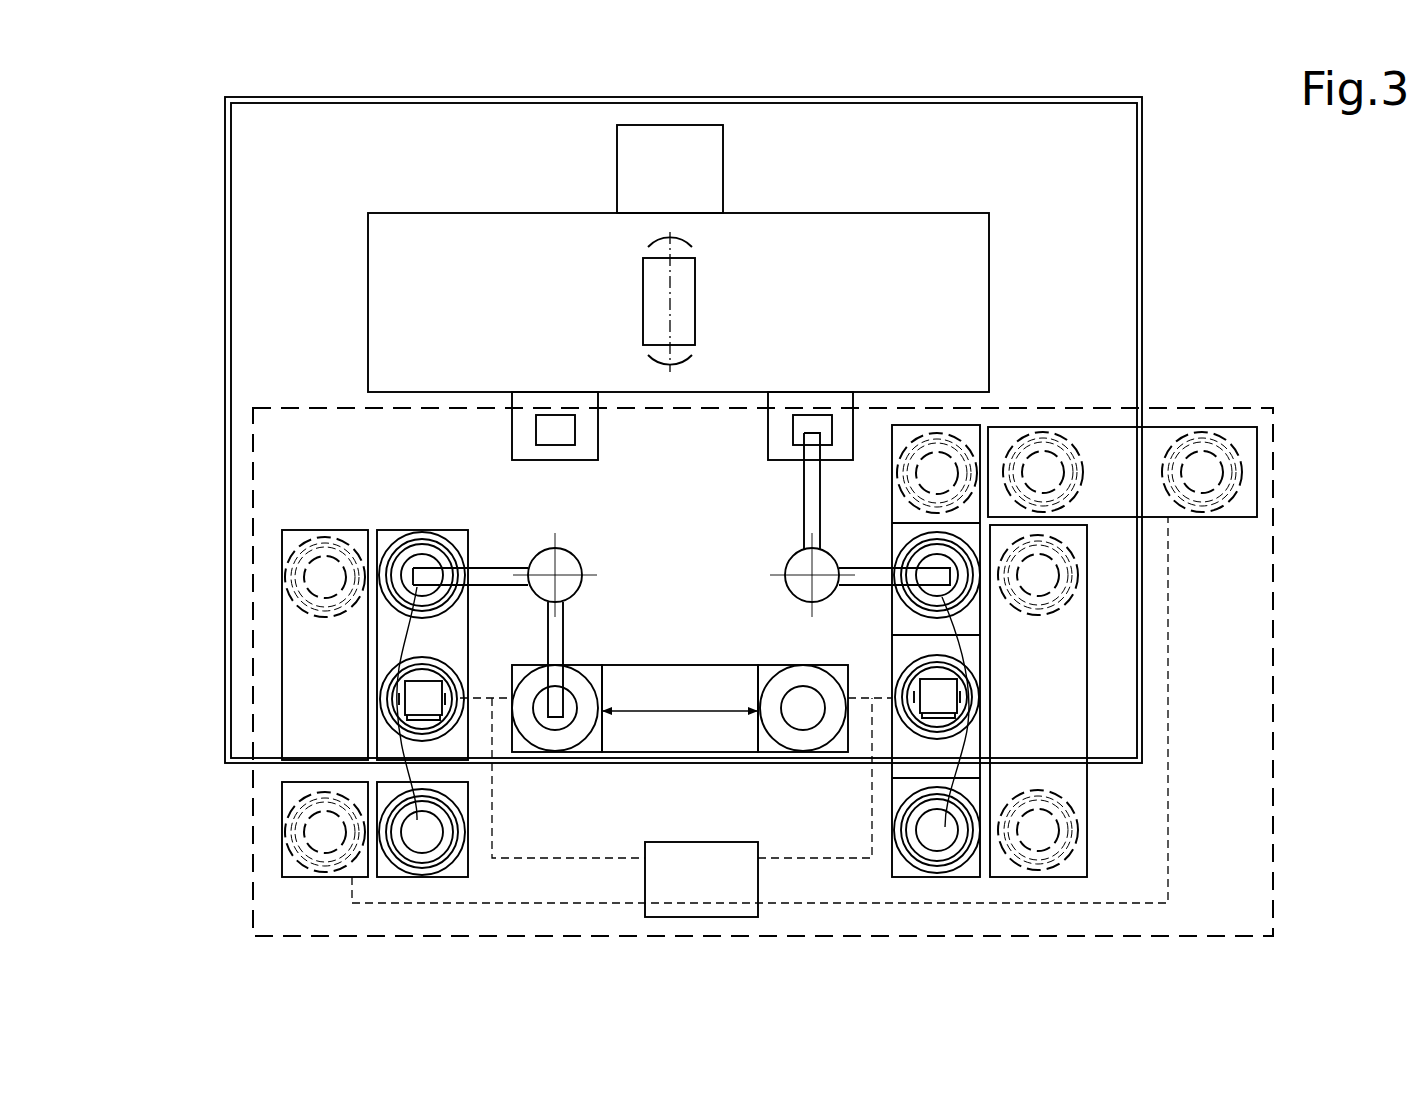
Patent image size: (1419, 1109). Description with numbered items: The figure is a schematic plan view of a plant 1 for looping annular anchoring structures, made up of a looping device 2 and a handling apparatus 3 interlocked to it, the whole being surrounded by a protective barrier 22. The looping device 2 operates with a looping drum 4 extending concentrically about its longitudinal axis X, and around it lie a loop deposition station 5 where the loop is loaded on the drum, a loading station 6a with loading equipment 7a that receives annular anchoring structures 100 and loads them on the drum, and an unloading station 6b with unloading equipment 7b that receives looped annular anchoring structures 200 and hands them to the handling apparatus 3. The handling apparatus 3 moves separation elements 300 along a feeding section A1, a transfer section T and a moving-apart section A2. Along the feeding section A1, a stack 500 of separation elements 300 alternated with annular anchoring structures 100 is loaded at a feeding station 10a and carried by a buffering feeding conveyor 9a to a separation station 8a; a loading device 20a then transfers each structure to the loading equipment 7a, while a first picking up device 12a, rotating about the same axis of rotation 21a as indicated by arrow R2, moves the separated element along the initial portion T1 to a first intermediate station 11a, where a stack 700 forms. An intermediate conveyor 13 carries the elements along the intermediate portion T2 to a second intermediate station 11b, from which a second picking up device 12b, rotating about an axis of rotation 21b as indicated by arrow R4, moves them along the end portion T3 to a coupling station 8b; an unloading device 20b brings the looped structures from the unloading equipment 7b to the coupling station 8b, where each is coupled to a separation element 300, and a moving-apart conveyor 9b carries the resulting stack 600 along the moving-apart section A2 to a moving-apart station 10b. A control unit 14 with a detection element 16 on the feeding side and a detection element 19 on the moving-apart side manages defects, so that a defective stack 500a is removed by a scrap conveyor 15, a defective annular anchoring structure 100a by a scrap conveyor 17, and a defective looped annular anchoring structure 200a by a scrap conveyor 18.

The plant for looping annular anchoring structures 1 is at (1262, 267).
The looping device 2 is at (838, 232).
The handling apparatus 3 is at (1193, 425).
The looping drum 4 is at (653, 285).
The loop deposition station 5 is at (670, 169).
The loading station 6a is at (833, 400).
The unloading station 6b is at (548, 398).
The loading equipment 7a is at (797, 415).
The unloading equipment 7b is at (552, 430).
The separation station 8a is at (968, 532).
The coupling station 8b is at (417, 545).
The feeding conveyor 9a is at (973, 648).
The moving-apart conveyor 9b is at (387, 625).
The feeding station 10a is at (970, 875).
The moving-apart station 10b is at (462, 792).
The first intermediate station 11a is at (768, 667).
The second intermediate station 11b is at (590, 665).
The first picking up device 12a is at (873, 573).
The second picking up device 12b is at (565, 618).
The intermediate conveyor 13 is at (705, 677).
The control unit 14 is at (760, 717).
The scrap conveyor 15 is at (1104, 447).
The detection element 16 is at (937, 697).
The scrap conveyor 17 is at (1077, 653).
The scrap conveyor 18 is at (295, 650).
The detection element 19 is at (422, 699).
The loading device 20a is at (806, 500).
The unloading device 20b is at (487, 568).
The axis of rotation 21a is at (810, 573).
The axis of rotation 21b is at (582, 567).
The protective barrier 22 is at (232, 212).
The annular anchoring structure 100 is at (917, 858).
The defective annular anchoring structure 100a is at (1068, 568).
The looped annular anchoring structure 200 is at (385, 538).
The defective looped annular anchoring structure 200a is at (296, 557).
The separation element 300 is at (450, 530).
The stack 500 is at (993, 870).
The defective stack 500a is at (943, 432).
The stack 600 is at (470, 870).
The stack 700 is at (787, 737).
The feeding section A1 is at (960, 737).
The moving-apart section A2 is at (387, 747).
The rotation arrow R2 is at (846, 557).
The rotation arrow R4 is at (545, 536).
The transfer section T is at (680, 697).
The initial portion T1 is at (940, 597).
The intermediate portion T2 is at (642, 713).
The end portion T3 is at (520, 696).
The longitudinal axis X is at (672, 357).